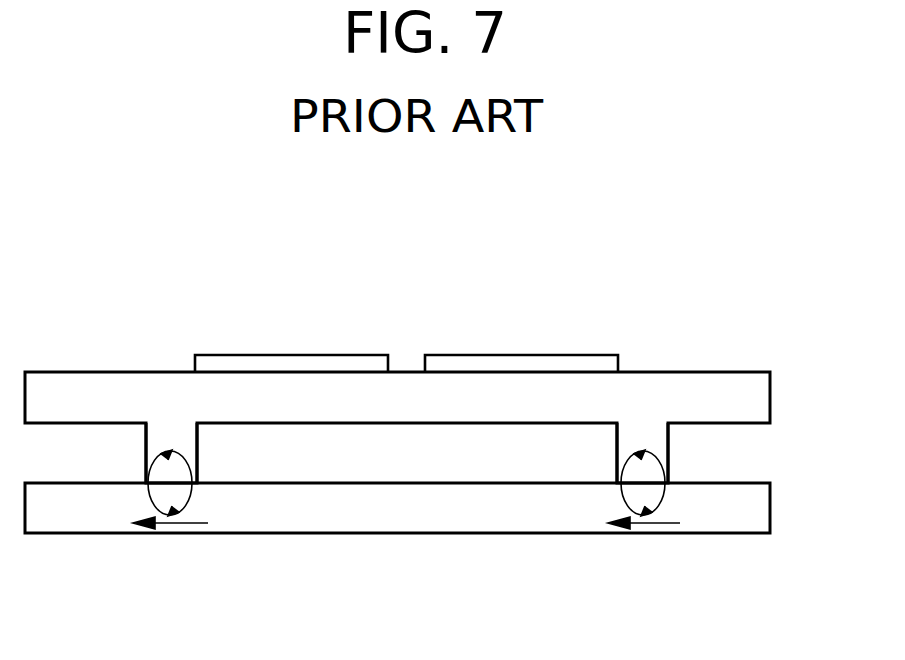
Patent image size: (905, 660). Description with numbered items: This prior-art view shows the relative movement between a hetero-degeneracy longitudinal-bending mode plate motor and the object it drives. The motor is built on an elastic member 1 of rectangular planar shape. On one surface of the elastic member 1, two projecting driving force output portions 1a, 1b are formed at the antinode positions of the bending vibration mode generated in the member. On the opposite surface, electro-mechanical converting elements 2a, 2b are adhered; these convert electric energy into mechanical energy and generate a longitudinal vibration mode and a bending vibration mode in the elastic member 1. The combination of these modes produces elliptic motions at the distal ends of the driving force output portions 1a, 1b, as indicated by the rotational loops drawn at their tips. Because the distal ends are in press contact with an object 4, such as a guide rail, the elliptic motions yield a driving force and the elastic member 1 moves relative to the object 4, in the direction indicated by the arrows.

The elastic member 1 is at (770, 395).
The driving force output portion 1a is at (146, 452).
The driving force output portion 1b is at (668, 446).
The electro-mechanical converting element 2a is at (302, 363).
The electro-mechanical converting element 2b is at (512, 363).
The object 4 is at (770, 507).